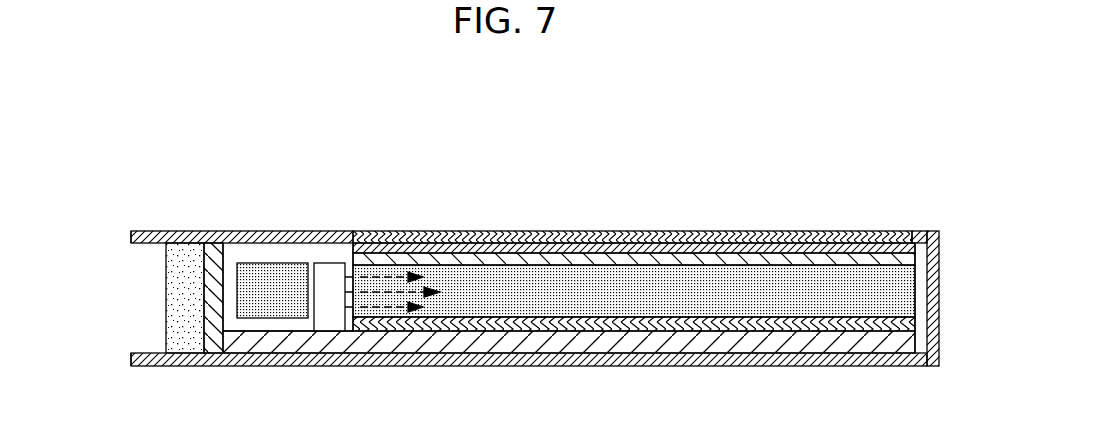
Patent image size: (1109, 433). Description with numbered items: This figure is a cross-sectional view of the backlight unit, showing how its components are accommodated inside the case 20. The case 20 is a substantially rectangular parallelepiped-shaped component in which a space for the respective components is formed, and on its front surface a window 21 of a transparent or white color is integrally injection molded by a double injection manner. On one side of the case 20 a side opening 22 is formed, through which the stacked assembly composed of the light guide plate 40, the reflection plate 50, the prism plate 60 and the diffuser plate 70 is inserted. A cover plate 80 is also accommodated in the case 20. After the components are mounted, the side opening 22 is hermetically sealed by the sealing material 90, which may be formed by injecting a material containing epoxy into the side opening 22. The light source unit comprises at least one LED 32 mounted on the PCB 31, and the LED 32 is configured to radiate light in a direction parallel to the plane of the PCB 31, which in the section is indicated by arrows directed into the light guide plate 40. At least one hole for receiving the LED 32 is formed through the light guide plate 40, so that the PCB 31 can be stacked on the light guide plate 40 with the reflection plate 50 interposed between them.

The case 20 is at (548, 357).
The window 21 is at (488, 236).
The side opening 22 is at (153, 355).
The PCB 31 is at (375, 343).
The LED 32 is at (330, 281).
The light guide plate 40 is at (752, 282).
The reflection plate 50 is at (630, 327).
The prism plate 60 is at (662, 260).
The diffuser plate 70 is at (573, 250).
The cover plate 80 is at (215, 348).
The sealing material 90 is at (183, 345).